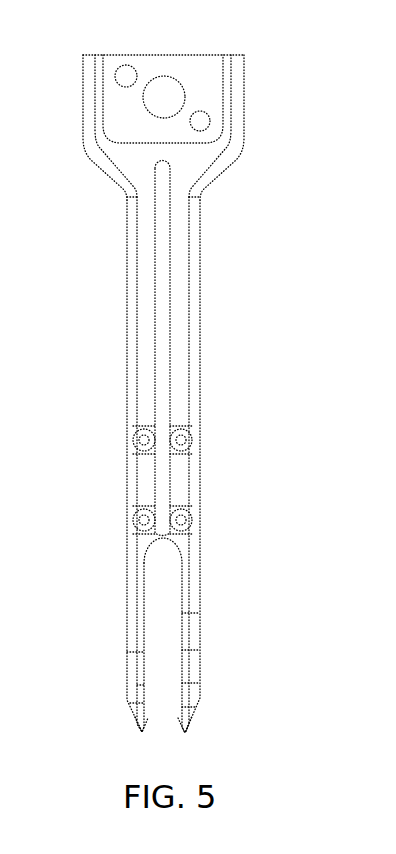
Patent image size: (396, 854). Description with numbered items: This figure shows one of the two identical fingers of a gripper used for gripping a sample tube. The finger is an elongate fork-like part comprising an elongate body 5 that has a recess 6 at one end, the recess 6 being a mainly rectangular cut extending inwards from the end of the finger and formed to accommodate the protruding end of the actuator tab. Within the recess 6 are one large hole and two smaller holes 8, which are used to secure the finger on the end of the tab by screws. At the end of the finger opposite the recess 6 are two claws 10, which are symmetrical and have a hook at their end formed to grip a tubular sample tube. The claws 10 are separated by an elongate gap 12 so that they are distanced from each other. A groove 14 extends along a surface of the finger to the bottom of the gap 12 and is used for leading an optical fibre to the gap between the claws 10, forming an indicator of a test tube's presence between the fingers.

The elongate body 5 is at (193, 317).
The recess 6 is at (187, 65).
The smaller holes 8 is at (119, 66).
The claws 10 is at (137, 632).
The elongate gap 12 is at (158, 678).
The groove 14 is at (163, 372).